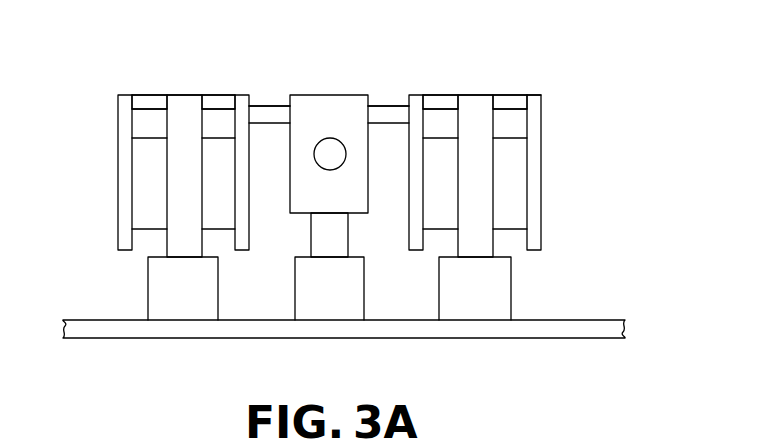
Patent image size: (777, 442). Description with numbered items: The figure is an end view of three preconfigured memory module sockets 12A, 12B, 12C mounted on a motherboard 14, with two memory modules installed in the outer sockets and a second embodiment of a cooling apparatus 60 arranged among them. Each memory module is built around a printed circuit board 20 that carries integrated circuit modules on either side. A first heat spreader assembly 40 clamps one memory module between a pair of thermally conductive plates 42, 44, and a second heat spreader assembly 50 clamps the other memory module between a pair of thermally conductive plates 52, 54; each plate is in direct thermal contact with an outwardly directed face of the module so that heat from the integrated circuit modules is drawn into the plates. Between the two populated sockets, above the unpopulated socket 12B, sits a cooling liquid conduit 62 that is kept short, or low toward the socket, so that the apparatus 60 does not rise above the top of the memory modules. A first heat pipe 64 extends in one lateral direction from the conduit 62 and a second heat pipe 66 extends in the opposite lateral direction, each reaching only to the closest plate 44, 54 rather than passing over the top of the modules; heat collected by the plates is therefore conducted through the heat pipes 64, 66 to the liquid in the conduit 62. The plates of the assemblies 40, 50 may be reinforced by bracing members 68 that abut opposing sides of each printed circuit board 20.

The memory module socket 12A is at (148, 277).
The memory module socket 12B is at (293, 307).
The memory module socket 12C is at (512, 283).
The motherboard 14 is at (610, 320).
The printed circuit board 20 is at (183, 100).
The first heat spreader assembly 40 is at (100, 106).
The thermally conductive plate 42 is at (124, 185).
The thermally conductive plate 44 is at (250, 197).
The second heat spreader assembly 50 is at (556, 148).
The thermally conductive plate 52 is at (542, 172).
The thermally conductive plate 54 is at (408, 197).
The cooling apparatus 60 is at (545, 77).
The cooling liquid conduit 62 is at (337, 102).
The heat pipe 64 is at (268, 105).
The heat pipe 66 is at (383, 105).
The bracing member 68 is at (142, 93).